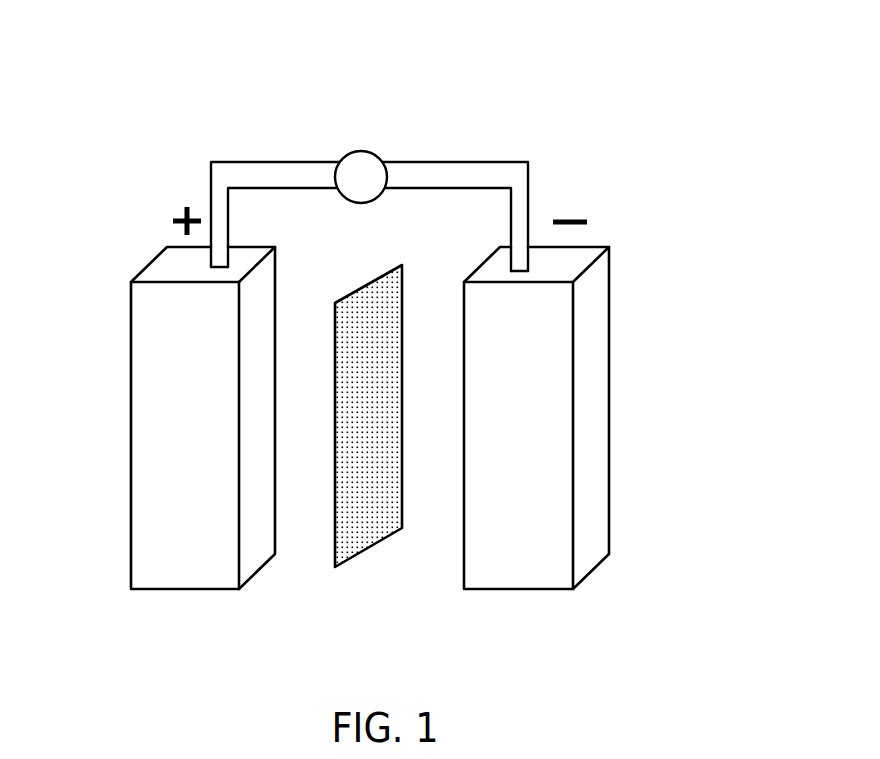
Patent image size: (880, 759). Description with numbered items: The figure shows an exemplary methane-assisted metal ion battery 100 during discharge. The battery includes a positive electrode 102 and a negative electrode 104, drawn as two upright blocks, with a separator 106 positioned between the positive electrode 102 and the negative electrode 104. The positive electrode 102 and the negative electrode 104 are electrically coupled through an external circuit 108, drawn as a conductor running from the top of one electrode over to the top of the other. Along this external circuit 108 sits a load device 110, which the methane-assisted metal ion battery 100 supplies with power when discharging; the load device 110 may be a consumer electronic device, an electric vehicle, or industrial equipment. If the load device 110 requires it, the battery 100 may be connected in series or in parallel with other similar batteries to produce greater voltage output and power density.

The methane-assisted metal ion battery 100 is at (636, 66).
The positive electrode 102 is at (131, 437).
The negative electrode 104 is at (609, 398).
The separator 106 is at (370, 550).
The external circuit 108 is at (265, 161).
The load device 110 is at (361, 151).